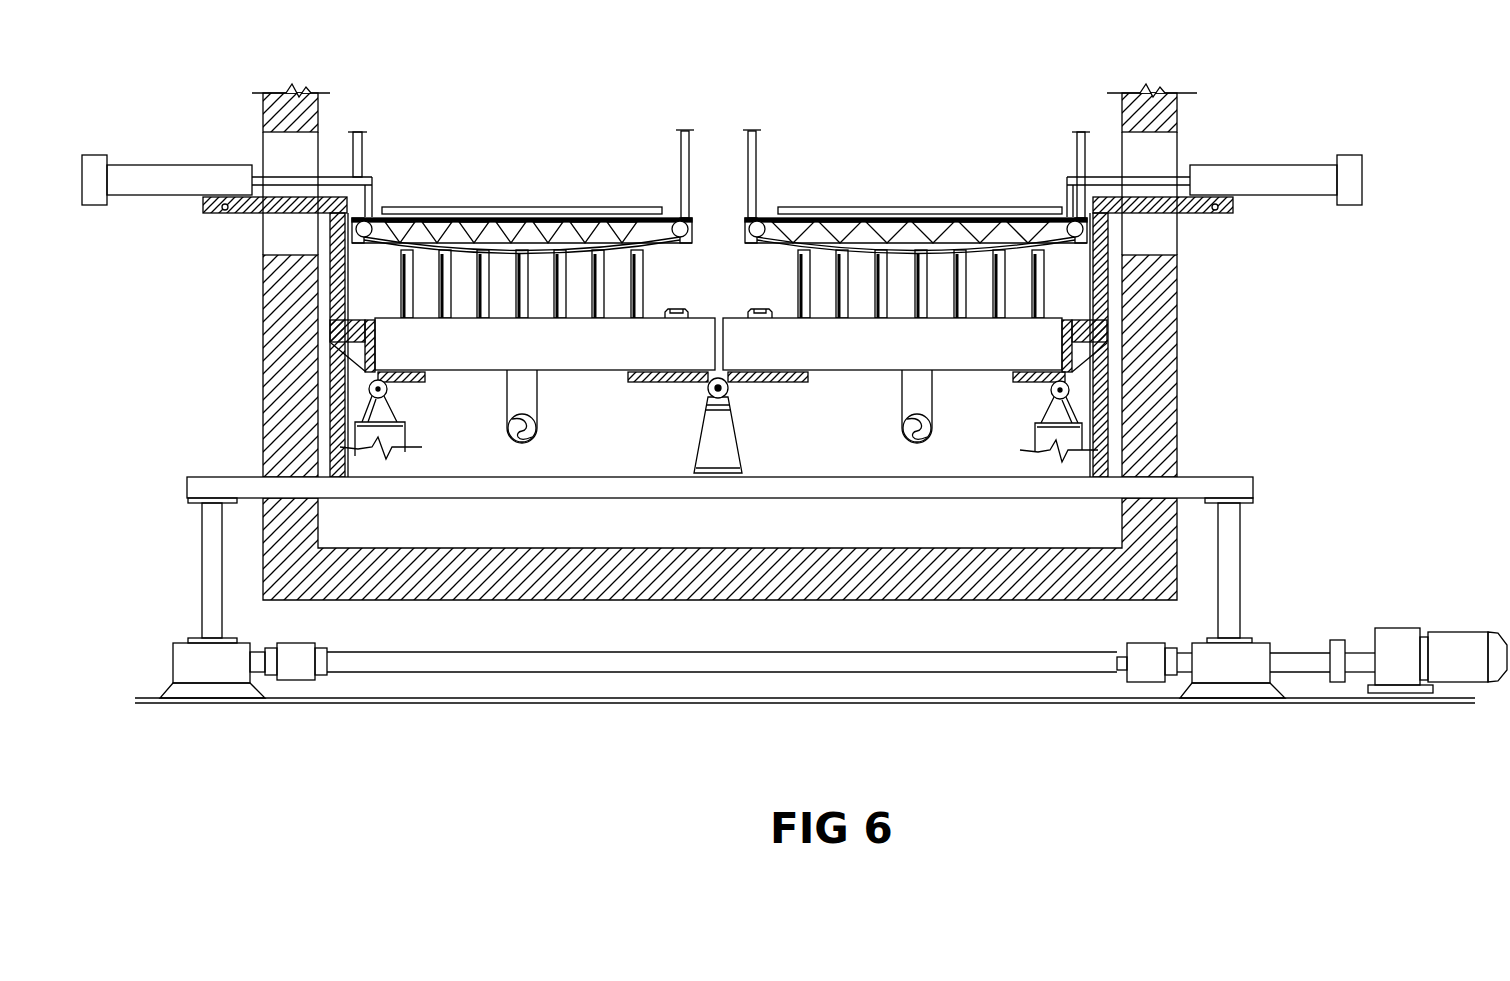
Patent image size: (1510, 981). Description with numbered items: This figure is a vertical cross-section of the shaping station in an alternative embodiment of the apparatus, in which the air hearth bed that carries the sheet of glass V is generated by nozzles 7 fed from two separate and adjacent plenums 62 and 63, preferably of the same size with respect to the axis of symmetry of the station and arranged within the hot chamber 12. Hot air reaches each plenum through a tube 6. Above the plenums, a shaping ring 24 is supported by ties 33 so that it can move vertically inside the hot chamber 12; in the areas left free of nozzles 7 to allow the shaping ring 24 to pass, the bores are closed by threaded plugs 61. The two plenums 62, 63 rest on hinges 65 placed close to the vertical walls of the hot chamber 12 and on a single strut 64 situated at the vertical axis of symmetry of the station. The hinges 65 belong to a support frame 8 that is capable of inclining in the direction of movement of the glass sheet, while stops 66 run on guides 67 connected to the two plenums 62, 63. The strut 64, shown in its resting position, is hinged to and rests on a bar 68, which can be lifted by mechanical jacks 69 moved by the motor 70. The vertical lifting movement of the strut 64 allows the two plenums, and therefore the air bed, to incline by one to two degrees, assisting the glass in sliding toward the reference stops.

The hot chamber 12 is at (322, 96).
The stops 66 is at (160, 176).
The guides 67 is at (228, 214).
The ties 33 is at (756, 152).
The sheet of glass V is at (522, 208).
The shaping ring 24 is at (690, 228).
The nozzles 7 is at (643, 286).
The threaded plugs 61 is at (758, 310).
The plenum 63 is at (624, 372).
The plenum 62 is at (834, 372).
The strut 64 is at (730, 392).
The tube 6 is at (530, 390).
The hinges 65 is at (390, 394).
The support frame 8 is at (398, 436).
The bar 68 is at (702, 490).
The mechanical jacks 69 is at (1250, 660).
The motor 70 is at (1442, 646).